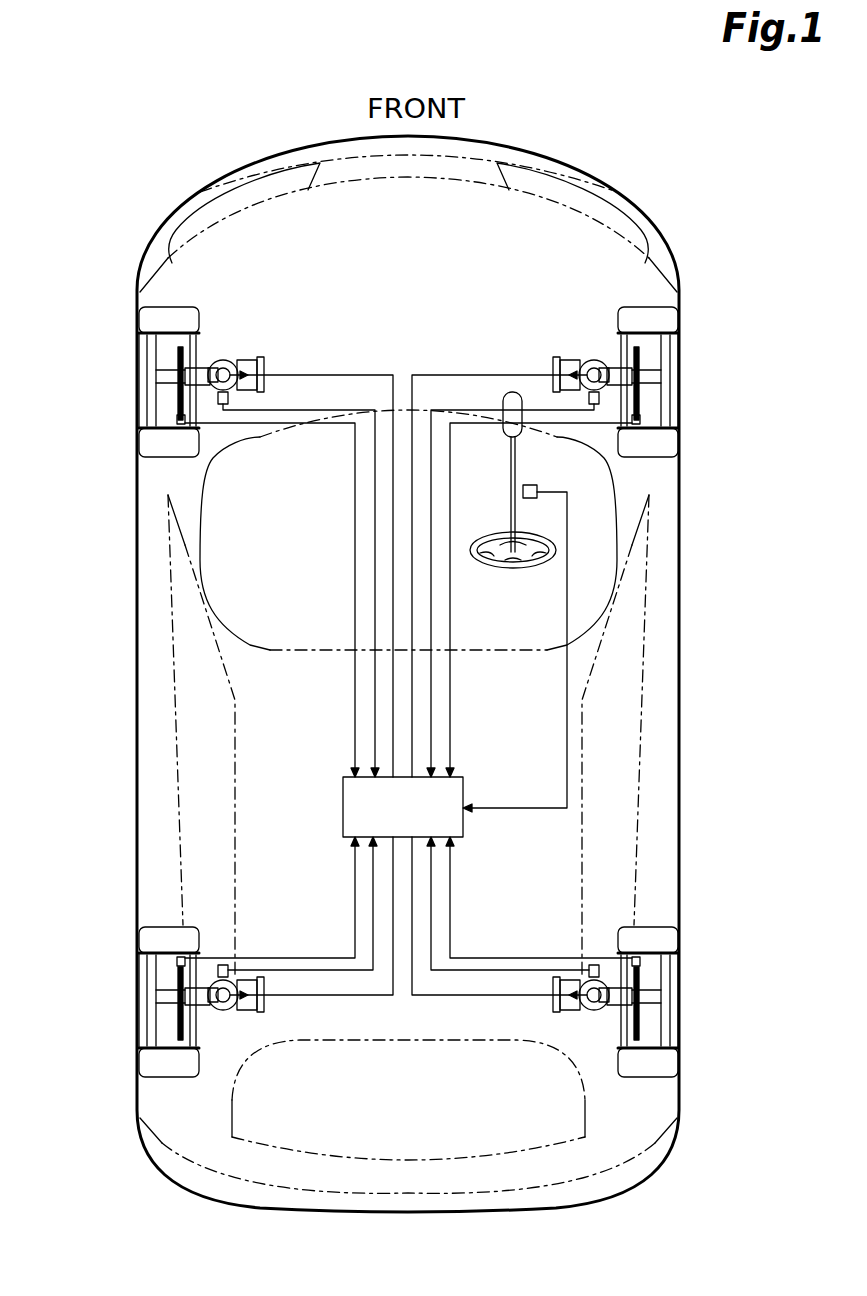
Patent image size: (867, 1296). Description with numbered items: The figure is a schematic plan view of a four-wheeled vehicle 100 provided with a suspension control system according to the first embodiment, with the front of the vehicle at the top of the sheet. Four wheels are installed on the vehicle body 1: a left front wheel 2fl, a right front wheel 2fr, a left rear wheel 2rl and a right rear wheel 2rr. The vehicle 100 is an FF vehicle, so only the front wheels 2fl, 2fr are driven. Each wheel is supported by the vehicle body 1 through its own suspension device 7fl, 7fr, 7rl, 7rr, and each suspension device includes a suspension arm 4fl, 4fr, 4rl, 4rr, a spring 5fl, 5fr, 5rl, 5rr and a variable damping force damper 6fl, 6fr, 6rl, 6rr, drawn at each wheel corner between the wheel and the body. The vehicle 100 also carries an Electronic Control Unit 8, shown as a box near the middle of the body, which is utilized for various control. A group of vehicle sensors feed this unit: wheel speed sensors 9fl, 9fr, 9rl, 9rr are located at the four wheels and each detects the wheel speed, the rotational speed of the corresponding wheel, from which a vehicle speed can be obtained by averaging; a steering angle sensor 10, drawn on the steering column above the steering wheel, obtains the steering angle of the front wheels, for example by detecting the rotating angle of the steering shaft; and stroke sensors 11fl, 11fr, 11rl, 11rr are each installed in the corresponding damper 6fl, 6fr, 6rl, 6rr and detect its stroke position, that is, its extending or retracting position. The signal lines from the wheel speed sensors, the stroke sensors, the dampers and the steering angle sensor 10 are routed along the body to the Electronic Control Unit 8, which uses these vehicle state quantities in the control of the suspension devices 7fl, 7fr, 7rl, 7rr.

The vehicle 100 is at (186, 134).
The vehicle body 1 is at (600, 178).
The left front wheel 2fl is at (140, 347).
The right front wheel 2fr is at (677, 347).
The left rear wheel 2rl is at (140, 967).
The right rear wheel 2rr is at (677, 967).
The suspension arm 4fl is at (183, 390).
The suspension arm 4fr is at (634, 390).
The suspension arm 4rl is at (183, 1010).
The suspension arm 4rr is at (634, 1010).
The spring 5fl is at (178, 372).
The spring 5fr is at (639, 372).
The spring 5rl is at (178, 992).
The spring 5rr is at (639, 992).
The variable damping force damper 6fl is at (224, 360).
The variable damping force damper 6fr is at (593, 360).
The variable damping force damper 6rl is at (228, 1009).
The variable damping force damper 6rr is at (589, 1009).
The suspension device 7fl is at (247, 342).
The suspension device 7fr is at (570, 342).
The suspension device 7rl is at (254, 1022).
The suspension device 7rr is at (563, 1022).
The Electronic Control Unit 8 is at (458, 777).
The wheel speed sensor 9fl is at (181, 428).
The wheel speed sensor 9fr is at (637, 428).
The wheel speed sensor 9rl is at (180, 957).
The wheel speed sensor 9rr is at (637, 957).
The steering angle sensor 10 is at (527, 484).
The stroke sensor 11fl is at (222, 403).
The stroke sensor 11fr is at (592, 400).
The stroke sensor 11rl is at (225, 964).
The stroke sensor 11rr is at (592, 964).